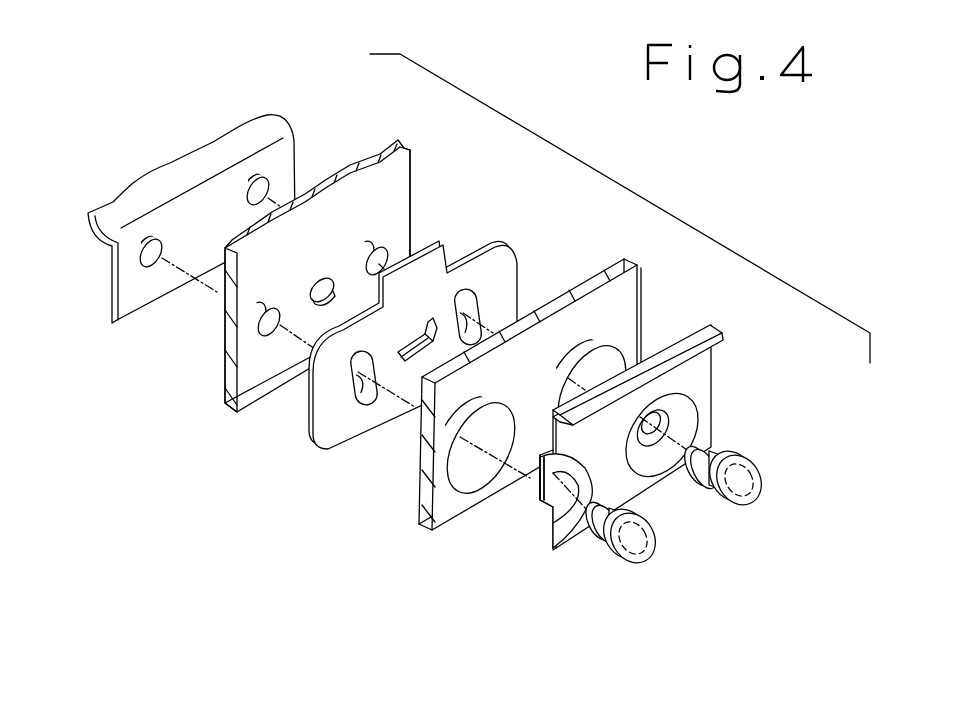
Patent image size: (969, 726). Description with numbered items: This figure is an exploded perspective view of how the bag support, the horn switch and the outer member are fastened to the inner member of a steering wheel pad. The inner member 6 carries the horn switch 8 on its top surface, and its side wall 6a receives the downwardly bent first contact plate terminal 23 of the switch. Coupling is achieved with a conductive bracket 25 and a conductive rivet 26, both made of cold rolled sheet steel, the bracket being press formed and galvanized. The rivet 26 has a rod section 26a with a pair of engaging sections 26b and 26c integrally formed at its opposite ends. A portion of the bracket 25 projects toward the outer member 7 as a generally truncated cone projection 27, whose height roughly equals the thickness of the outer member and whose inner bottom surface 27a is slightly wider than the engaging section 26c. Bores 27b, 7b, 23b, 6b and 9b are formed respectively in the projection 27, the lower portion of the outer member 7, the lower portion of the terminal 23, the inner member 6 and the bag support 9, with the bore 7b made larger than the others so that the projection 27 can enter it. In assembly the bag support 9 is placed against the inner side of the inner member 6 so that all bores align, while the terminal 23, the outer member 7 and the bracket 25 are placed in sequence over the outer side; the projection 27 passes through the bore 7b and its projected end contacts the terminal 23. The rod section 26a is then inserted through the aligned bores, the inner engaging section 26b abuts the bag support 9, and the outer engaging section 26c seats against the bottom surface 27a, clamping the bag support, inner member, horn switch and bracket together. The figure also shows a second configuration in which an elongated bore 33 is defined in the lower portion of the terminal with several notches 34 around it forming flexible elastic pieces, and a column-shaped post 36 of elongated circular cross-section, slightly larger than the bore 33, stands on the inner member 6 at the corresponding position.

The inner member 6 is at (317, 250).
The side wall 6a is at (403, 173).
The bore 6b is at (386, 256).
The outer member 7 is at (555, 387).
The bore 7b is at (626, 345).
The horn switch 8 is at (410, 310).
The bag support 9 is at (204, 217).
The bore 9b is at (266, 185).
The first contact plate terminal 23 is at (410, 324).
The bore 23b is at (478, 305).
The bracket 25 is at (713, 327).
The rivet 26 is at (704, 543).
The rod section 26a is at (740, 455).
The engaging section 26b is at (727, 447).
The engaging section 26c is at (832, 437).
The projection 27 is at (634, 453).
The bottom surface 27a is at (666, 418).
The bore 27b is at (538, 482).
The elongated bore 33 is at (404, 323).
The notch 34 is at (436, 326).
The post 36 is at (325, 285).